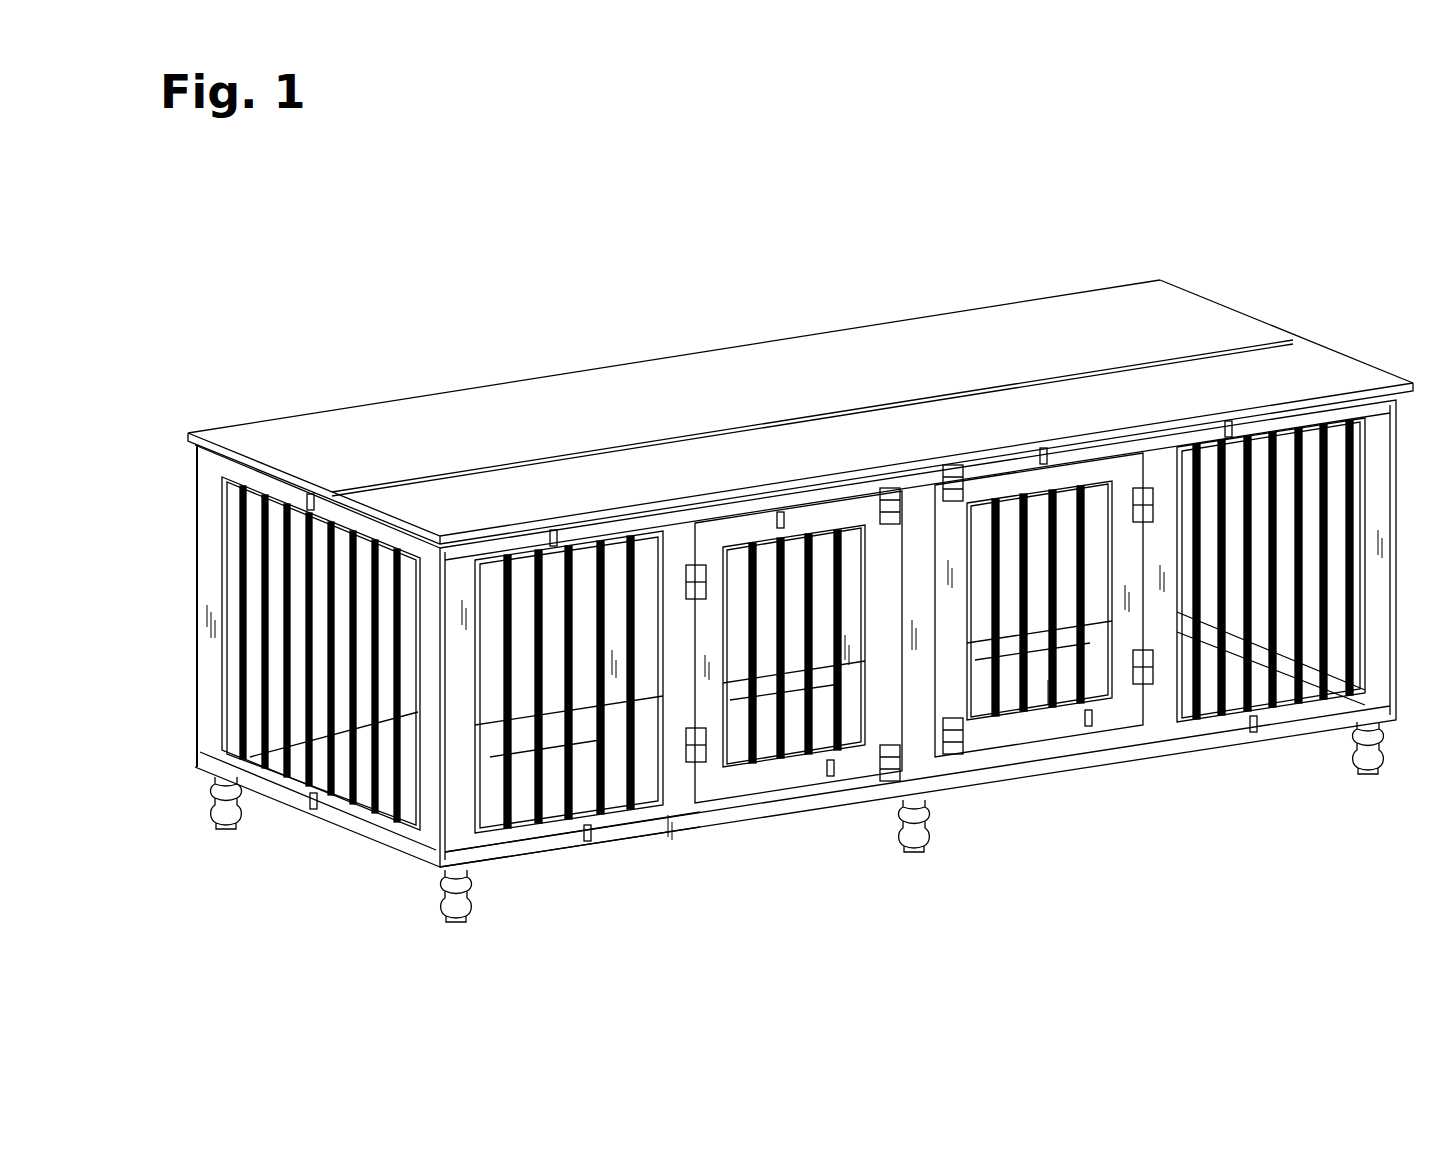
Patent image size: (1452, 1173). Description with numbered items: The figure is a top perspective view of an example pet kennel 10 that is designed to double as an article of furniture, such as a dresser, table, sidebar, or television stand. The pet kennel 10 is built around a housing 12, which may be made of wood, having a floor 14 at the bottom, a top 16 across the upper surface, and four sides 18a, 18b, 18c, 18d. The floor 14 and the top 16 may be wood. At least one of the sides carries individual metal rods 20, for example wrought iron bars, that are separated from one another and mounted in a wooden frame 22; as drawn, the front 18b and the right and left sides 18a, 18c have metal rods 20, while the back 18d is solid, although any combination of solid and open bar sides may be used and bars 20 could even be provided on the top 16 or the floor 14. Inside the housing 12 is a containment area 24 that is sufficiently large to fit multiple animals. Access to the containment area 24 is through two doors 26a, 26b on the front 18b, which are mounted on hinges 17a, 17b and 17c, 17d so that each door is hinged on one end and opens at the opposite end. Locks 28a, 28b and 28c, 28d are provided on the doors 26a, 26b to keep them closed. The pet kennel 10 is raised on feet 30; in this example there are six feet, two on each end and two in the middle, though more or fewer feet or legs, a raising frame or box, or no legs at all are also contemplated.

The pet kennel 10 is at (1258, 263).
The housing 12 is at (266, 409).
The floor 14 is at (520, 787).
The top 16 is at (667, 395).
The hinge 17a is at (695, 762).
The hinge 17b is at (692, 568).
The hinge 17c is at (1150, 690).
The hinge 17d is at (1141, 488).
The side 18a is at (320, 823).
The front 18b is at (607, 845).
The side 18c is at (1338, 352).
The back 18d is at (487, 385).
The metal rods 20 is at (243, 568).
The wooden frame 22 is at (200, 687).
The containment area 24 is at (1192, 689).
The door 26a is at (722, 795).
The door 26b is at (1042, 740).
The lock 28a is at (878, 781).
The lock 28b is at (892, 487).
The lock 28c is at (951, 465).
The lock 28d is at (960, 754).
The feet 30 is at (441, 906).